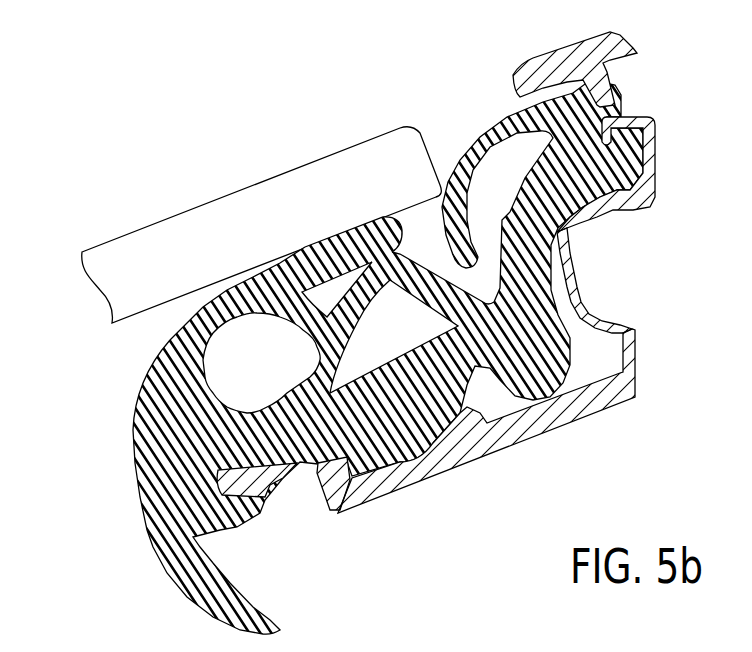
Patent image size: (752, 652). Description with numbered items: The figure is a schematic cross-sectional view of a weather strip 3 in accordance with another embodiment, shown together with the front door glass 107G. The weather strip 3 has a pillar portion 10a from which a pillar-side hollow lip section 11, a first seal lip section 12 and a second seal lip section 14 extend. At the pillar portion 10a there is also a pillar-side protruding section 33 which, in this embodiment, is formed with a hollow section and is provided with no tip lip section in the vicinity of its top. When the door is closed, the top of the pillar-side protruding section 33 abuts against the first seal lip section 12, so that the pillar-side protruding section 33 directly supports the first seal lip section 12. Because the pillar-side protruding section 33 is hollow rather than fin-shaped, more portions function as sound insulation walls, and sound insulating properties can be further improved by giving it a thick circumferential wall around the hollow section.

The weather strip 3 is at (118, 501).
The pillar portion 10a is at (435, 370).
The pillar-side hollow lip section 11 is at (207, 332).
The first seal lip section 12 is at (357, 243).
The second seal lip section 14 is at (490, 137).
The pillar-side protruding section 33 is at (450, 297).
The front door glass 107G is at (282, 193).